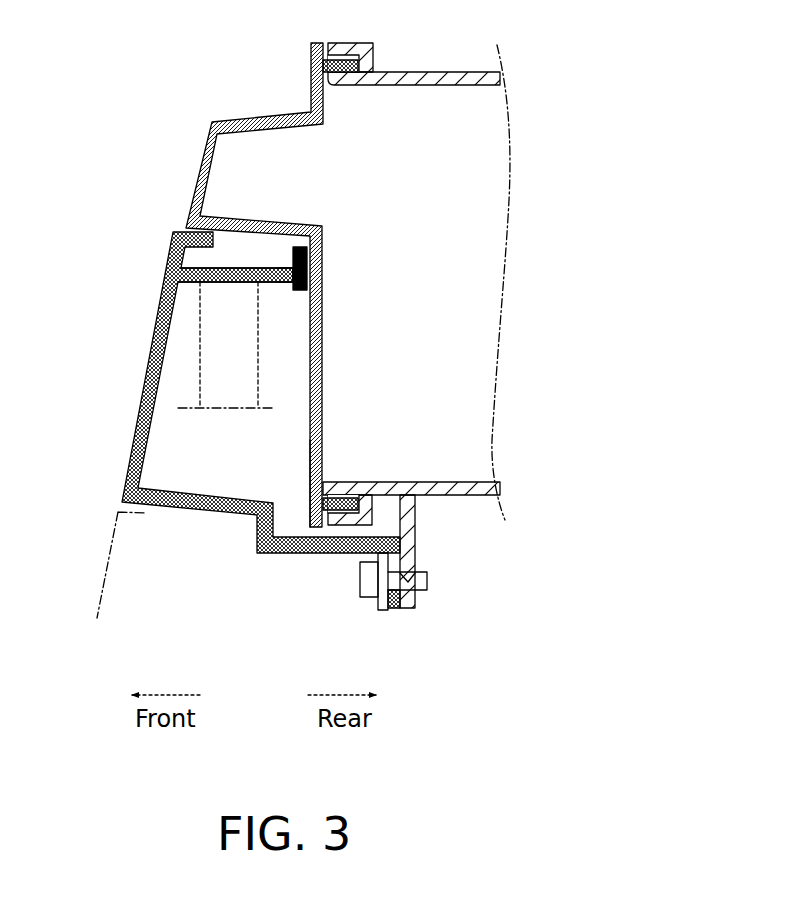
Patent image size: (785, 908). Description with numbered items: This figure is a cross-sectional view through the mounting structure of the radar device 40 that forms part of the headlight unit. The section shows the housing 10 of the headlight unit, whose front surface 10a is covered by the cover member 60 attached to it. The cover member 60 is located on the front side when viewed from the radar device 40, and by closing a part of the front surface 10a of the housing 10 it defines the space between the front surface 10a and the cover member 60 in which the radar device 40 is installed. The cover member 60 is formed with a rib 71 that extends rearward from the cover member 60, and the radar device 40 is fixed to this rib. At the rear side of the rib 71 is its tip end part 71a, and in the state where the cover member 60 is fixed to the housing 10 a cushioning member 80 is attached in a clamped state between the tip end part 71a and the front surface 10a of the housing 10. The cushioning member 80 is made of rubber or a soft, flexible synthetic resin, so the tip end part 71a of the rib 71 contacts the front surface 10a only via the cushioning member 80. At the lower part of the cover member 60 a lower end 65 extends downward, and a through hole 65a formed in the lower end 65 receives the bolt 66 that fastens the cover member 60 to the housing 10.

The housing 10 is at (326, 305).
The front surface 10a is at (310, 462).
The radar device 40 is at (247, 357).
The cover member 60 is at (150, 338).
The lower end 65 is at (392, 612).
The through hole 65a is at (412, 573).
The bolt 66 is at (358, 583).
The rib 71 is at (247, 268).
The tip end part 71a is at (279, 267).
The cushioning member 80 is at (308, 268).